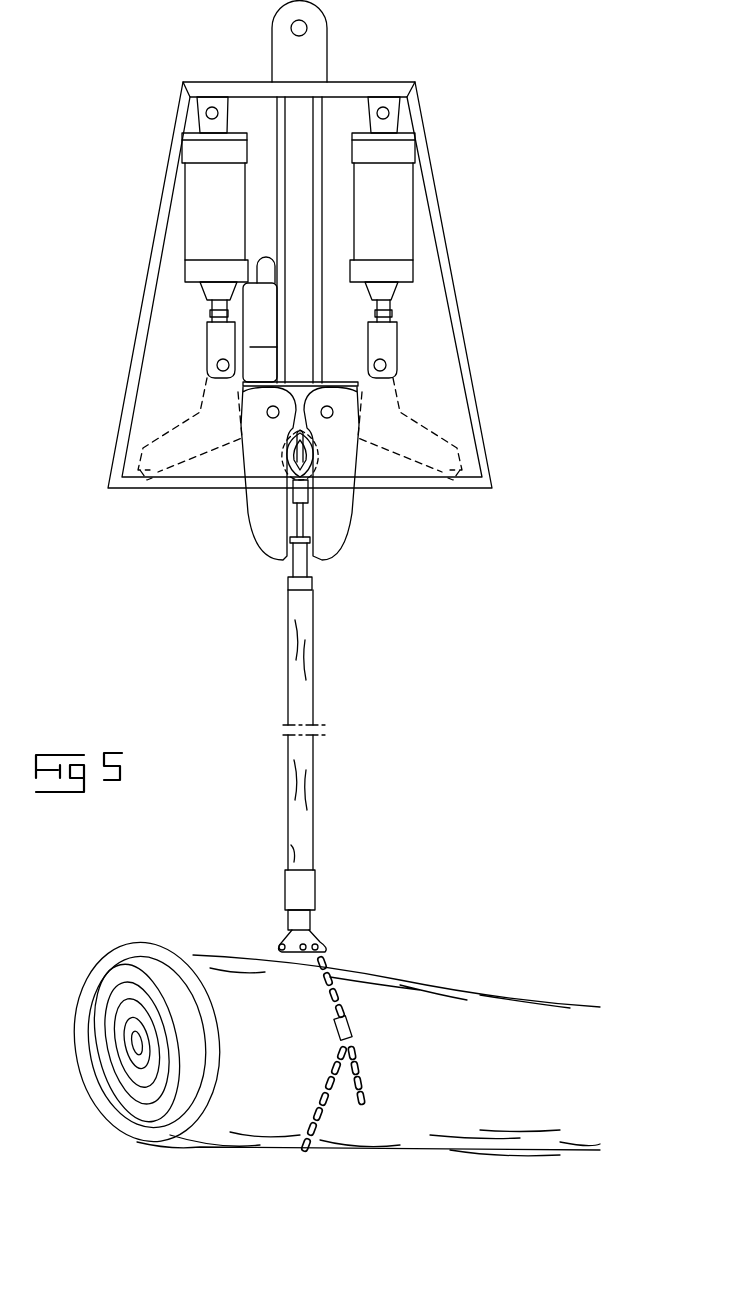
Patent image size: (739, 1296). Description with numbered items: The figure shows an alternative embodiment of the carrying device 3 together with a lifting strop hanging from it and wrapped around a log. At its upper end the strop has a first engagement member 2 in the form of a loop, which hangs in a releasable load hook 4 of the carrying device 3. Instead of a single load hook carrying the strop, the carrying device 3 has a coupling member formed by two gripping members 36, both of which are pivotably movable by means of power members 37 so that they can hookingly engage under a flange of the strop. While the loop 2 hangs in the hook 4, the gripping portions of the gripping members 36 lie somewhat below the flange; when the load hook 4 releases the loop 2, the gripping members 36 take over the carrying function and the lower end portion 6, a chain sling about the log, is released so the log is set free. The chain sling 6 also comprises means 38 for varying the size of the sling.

The first engagement member 2 is at (301, 405).
The carrying device 3 is at (463, 233).
The load hook 4 is at (287, 463).
The lower end portion 6 is at (338, 988).
The gripping members 36 is at (263, 520).
The power members 37 is at (205, 218).
The means for varying the size of the sling 38 is at (350, 1027).